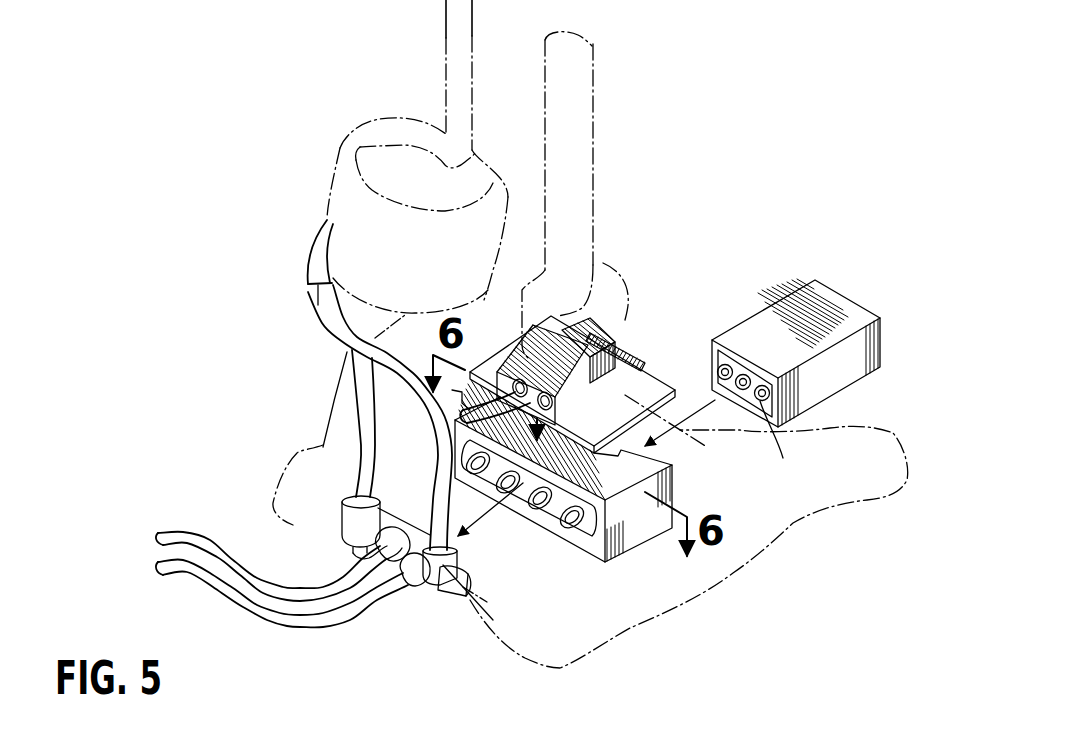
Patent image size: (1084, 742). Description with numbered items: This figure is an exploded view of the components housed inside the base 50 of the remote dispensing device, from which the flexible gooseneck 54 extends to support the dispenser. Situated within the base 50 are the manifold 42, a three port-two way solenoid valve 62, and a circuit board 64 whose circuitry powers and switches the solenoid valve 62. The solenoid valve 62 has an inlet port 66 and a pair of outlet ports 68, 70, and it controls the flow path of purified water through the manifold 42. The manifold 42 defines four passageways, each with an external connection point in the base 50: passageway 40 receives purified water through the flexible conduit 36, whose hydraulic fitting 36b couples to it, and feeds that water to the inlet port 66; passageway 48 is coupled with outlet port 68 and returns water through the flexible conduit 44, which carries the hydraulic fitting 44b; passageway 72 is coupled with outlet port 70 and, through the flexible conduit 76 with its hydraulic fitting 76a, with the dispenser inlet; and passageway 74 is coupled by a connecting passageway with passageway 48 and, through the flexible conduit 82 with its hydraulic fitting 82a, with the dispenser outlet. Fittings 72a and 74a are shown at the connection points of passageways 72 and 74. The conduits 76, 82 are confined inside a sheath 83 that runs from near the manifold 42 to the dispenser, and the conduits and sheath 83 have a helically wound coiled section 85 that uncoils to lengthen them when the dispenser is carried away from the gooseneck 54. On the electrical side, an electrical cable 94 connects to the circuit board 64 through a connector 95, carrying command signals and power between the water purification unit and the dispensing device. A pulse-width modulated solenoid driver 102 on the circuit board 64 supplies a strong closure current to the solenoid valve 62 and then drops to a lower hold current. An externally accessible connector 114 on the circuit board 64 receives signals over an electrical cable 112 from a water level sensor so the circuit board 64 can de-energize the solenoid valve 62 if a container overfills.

The sheath 83 is at (445, 28).
The gooseneck 54 is at (593, 133).
The coiled section 85 is at (326, 205).
The flexible conduit 76 is at (350, 335).
The flexible conduit 82 is at (355, 399).
The hydraulic fitting 82a is at (342, 518).
The hose fitting 74a is at (348, 535).
The flexible conduit 44 is at (193, 531).
The flexible conduit 36 is at (248, 606).
The hydraulic fitting 44b is at (350, 593).
The hydraulic fitting 36b is at (403, 592).
The hose fitting 72a is at (438, 590).
The hydraulic fitting 76a is at (465, 598).
The passageway 48 is at (443, 505).
The manifold 42 is at (680, 480).
The passageway 40 is at (538, 507).
The passageway 72 is at (563, 524).
The passageway 74 is at (470, 468).
The outlet port 70 is at (707, 447).
The PWM solenoid driver 102 is at (492, 366).
The externally accessible connector 114 is at (545, 326).
The electrical cable 94 is at (470, 432).
The electrical cable 112 is at (428, 400).
The connector 95 is at (645, 430).
The circuit board 64 is at (622, 435).
The solenoid valve 62 is at (880, 333).
The inlet port 66 is at (740, 374).
The outlet port 68 is at (715, 378).
The base 50 is at (752, 576).